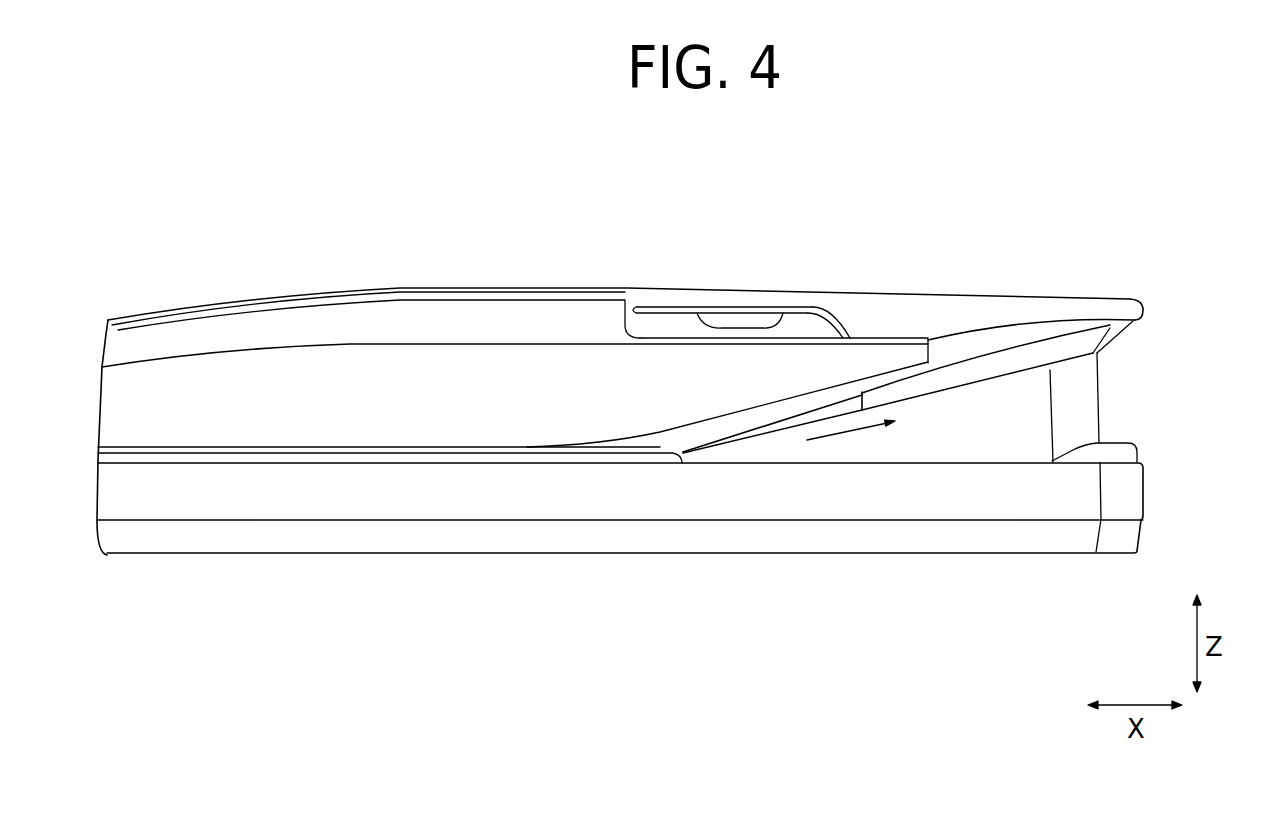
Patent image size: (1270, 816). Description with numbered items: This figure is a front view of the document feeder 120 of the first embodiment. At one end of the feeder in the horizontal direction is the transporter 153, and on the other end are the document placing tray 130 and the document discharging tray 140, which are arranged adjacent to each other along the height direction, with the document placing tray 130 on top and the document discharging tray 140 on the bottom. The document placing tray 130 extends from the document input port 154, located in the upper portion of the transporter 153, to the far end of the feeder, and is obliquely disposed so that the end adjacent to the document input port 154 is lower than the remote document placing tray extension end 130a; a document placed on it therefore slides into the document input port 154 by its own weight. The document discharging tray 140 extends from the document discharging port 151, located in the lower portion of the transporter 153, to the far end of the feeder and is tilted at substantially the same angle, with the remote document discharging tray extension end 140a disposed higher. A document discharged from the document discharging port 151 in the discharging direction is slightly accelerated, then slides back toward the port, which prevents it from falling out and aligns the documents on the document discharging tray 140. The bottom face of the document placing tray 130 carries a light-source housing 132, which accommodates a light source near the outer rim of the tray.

The document feeder 120 is at (927, 274).
The document placing tray 130 is at (1033, 327).
The document placing tray extension end 130a is at (1142, 312).
The light-source housing 132 is at (1005, 355).
The document discharging tray 140 is at (1115, 442).
The document discharging tray extension end 140a is at (1137, 450).
The document discharging port 151 is at (663, 455).
The transporter 153 is at (367, 320).
The document input port 154 is at (602, 320).